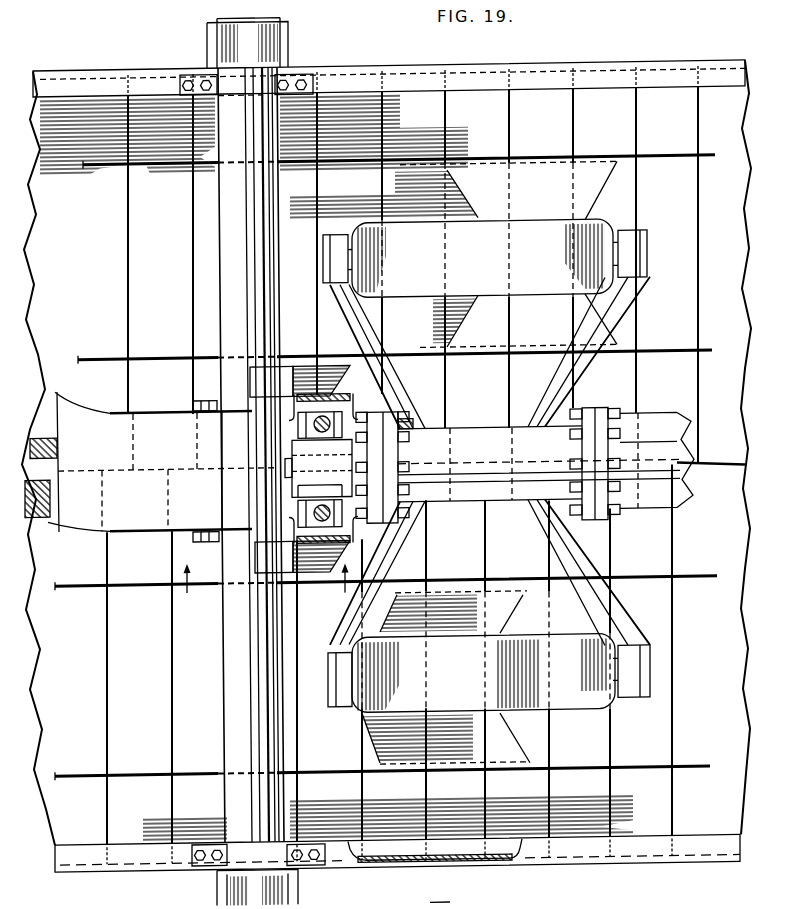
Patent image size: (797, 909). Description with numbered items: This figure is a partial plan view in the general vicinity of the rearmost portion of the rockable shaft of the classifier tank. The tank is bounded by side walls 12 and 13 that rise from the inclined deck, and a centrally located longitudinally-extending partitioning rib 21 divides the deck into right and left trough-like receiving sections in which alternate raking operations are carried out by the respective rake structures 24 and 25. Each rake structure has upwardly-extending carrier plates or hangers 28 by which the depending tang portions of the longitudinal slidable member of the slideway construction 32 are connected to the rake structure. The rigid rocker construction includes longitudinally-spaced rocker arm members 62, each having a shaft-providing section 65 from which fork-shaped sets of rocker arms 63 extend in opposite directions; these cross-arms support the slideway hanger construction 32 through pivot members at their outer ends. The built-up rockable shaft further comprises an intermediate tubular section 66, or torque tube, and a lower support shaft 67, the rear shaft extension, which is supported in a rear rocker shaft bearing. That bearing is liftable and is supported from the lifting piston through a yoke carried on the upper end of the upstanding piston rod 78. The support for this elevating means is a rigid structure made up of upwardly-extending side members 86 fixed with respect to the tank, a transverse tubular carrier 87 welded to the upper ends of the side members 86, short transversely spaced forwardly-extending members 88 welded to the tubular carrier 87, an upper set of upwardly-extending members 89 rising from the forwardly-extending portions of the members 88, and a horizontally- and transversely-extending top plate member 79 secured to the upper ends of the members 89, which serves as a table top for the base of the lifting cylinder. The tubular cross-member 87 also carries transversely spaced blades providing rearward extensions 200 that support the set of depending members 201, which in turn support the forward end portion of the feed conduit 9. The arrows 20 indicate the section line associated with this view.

The feed conduit 9 is at (115, 412).
The side wall 12 is at (757, 75).
The side wall 13 is at (467, 872).
The section line 20 is at (244, 735).
The partitioning rib 21 is at (57, 453).
The rake structure 24 is at (125, 320).
The rake structure 25 is at (88, 774).
The carrier plates or hangers 28 is at (548, 198).
The slideway construction 32 is at (486, 465).
The rocker arm member 62 is at (481, 428).
The rocker arms 63 is at (573, 384).
The shaft-providing section 65 is at (518, 464).
The intermediate tubular section 66 is at (657, 460).
The lower support shaft 67 is at (277, 477).
The piston rod 78 is at (338, 422).
The top plate member 79 is at (439, 905).
The side members 86 is at (258, 67).
The transverse tubular carrier 87 is at (233, 252).
The forwardly-extending members 88 is at (250, 384).
The upwardly-extending members 89 is at (290, 420).
The rearward extensions 200 is at (218, 418).
The depending members 201 is at (202, 540).